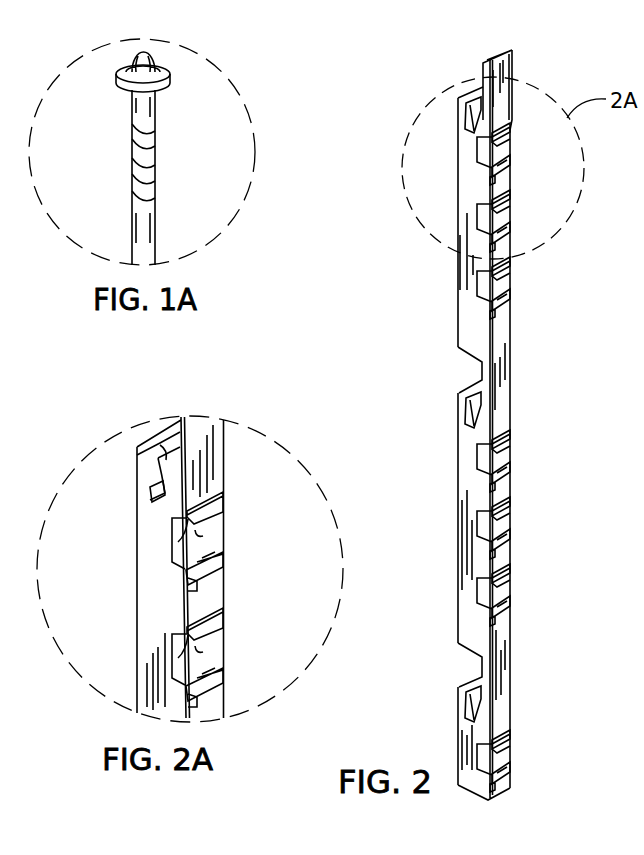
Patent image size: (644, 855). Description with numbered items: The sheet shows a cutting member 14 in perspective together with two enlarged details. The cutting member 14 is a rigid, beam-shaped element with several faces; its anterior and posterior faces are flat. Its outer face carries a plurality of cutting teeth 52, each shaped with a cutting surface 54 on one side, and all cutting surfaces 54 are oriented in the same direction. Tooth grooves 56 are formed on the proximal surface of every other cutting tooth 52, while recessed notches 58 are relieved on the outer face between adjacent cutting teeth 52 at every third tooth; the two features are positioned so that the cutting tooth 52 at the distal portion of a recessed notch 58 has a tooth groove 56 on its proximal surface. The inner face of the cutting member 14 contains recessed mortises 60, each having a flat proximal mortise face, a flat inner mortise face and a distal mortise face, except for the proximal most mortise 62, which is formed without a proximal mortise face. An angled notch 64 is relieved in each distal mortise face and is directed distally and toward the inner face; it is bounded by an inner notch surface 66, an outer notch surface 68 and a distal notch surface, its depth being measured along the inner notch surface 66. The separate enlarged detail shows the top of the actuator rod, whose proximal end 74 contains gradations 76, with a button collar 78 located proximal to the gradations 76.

In FIG. 2, the cutting member 14 is at (470, 155).
In FIG. 2, the cutting teeth 52 is at (511, 135).
In FIG. 2A, the cutting teeth 52 is at (219, 621).
In FIG. 2A, the cutting surface 54 is at (178, 542).
In FIG. 2A, the tooth grooves 56 is at (204, 543).
In FIG. 2A, the recessed notches 58 is at (197, 538).
In FIG. 2, the recessed mortise 60 is at (462, 371).
In FIG. 2, the proximal most mortise 62 is at (470, 72).
In FIG. 2, the angled notch 64 is at (465, 413).
In FIG. 2A, the inner notch surface 66 is at (163, 462).
In FIG. 2A, the outer notch surface 68 is at (150, 487).
In FIG. 1A, the proximal end 74 is at (132, 118).
In FIG. 1A, the gradations 76 is at (135, 172).
In FIG. 1A, the button collar 78 is at (168, 89).